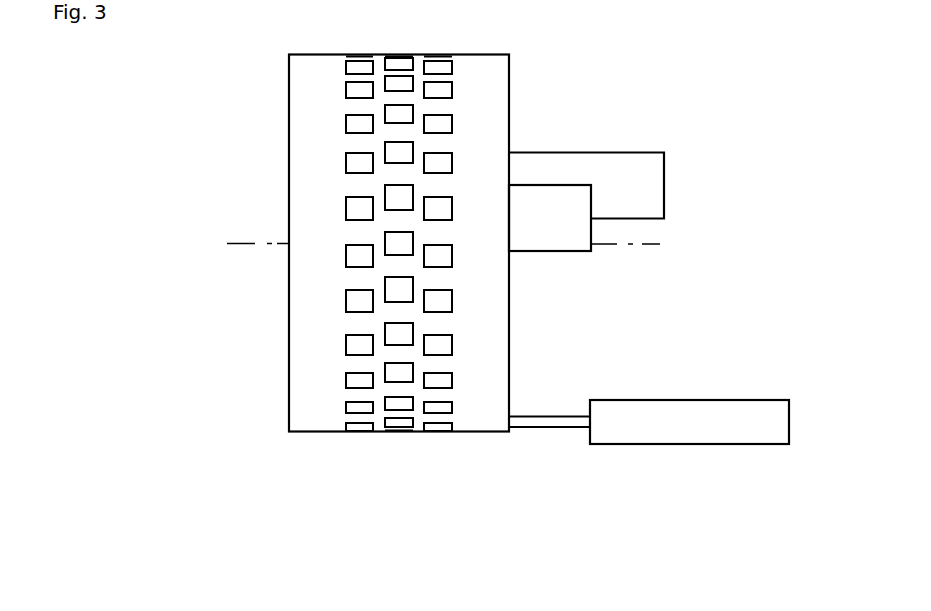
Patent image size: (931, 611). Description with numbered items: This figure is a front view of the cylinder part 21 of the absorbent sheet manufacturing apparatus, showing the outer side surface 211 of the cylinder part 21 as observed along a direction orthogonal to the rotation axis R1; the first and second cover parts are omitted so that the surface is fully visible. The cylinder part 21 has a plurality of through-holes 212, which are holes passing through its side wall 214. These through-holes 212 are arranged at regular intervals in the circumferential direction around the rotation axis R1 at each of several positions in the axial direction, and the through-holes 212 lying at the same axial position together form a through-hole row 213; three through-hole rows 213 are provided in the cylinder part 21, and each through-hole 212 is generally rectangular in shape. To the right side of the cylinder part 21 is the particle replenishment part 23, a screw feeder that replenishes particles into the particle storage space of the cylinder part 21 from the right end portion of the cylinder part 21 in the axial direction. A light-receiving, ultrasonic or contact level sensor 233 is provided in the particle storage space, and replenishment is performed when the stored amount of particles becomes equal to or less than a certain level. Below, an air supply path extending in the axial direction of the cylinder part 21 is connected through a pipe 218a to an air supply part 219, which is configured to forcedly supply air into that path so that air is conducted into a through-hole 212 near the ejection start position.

The cylinder part 21 is at (289, 80).
The outer side surface 211 is at (302, 147).
The through-hole 212 is at (441, 122).
The through-hole row 213 is at (358, 442).
The side wall 214 is at (327, 183).
The pipe 218a is at (550, 428).
The air supply part 219 is at (663, 444).
The particle replenishment part 23 is at (664, 183).
The level sensor 233 is at (591, 228).
The rotation axis R1 is at (248, 242).